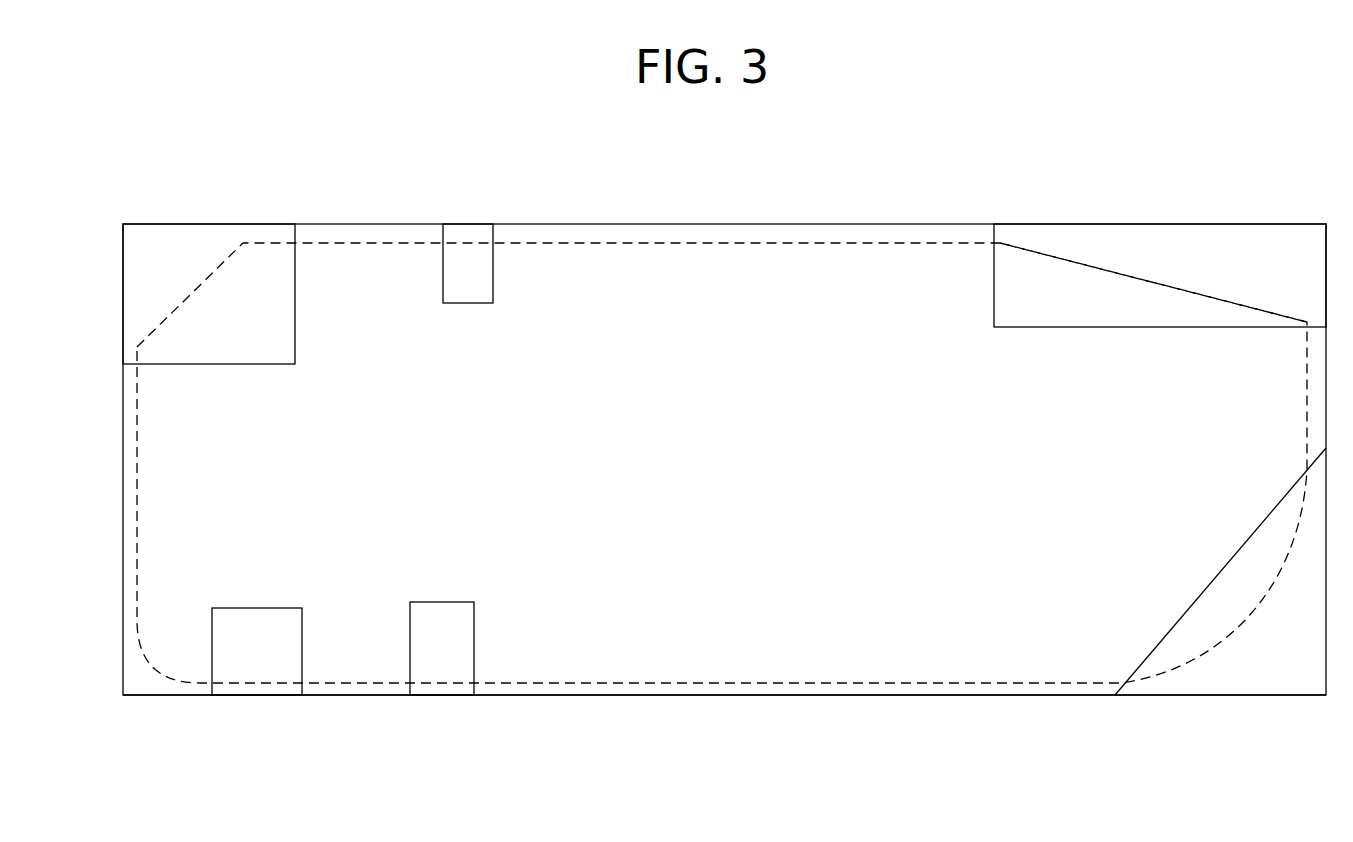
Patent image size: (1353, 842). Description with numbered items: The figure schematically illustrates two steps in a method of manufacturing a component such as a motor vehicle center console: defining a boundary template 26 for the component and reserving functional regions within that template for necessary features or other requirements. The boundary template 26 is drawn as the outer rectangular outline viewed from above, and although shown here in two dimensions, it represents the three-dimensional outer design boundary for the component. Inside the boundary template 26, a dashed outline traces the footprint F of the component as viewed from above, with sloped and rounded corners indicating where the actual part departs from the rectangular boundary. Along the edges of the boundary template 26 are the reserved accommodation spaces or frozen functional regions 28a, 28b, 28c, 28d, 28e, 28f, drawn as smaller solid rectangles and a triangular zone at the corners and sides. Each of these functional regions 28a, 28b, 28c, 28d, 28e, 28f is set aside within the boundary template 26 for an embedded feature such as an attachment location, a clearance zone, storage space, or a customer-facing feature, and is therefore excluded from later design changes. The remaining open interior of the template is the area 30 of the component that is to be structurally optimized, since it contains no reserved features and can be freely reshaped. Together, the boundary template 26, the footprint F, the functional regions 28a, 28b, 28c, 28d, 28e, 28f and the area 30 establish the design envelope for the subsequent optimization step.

The boundary template 26 is at (1113, 222).
The footprint F is at (808, 243).
The functional region 28a is at (195, 315).
The functional region 28b is at (468, 258).
The functional region 28c is at (1168, 302).
The functional region 28d is at (253, 653).
The functional region 28e is at (442, 648).
The functional region 28f is at (1235, 605).
The area to be structurally optimized 30 is at (800, 547).